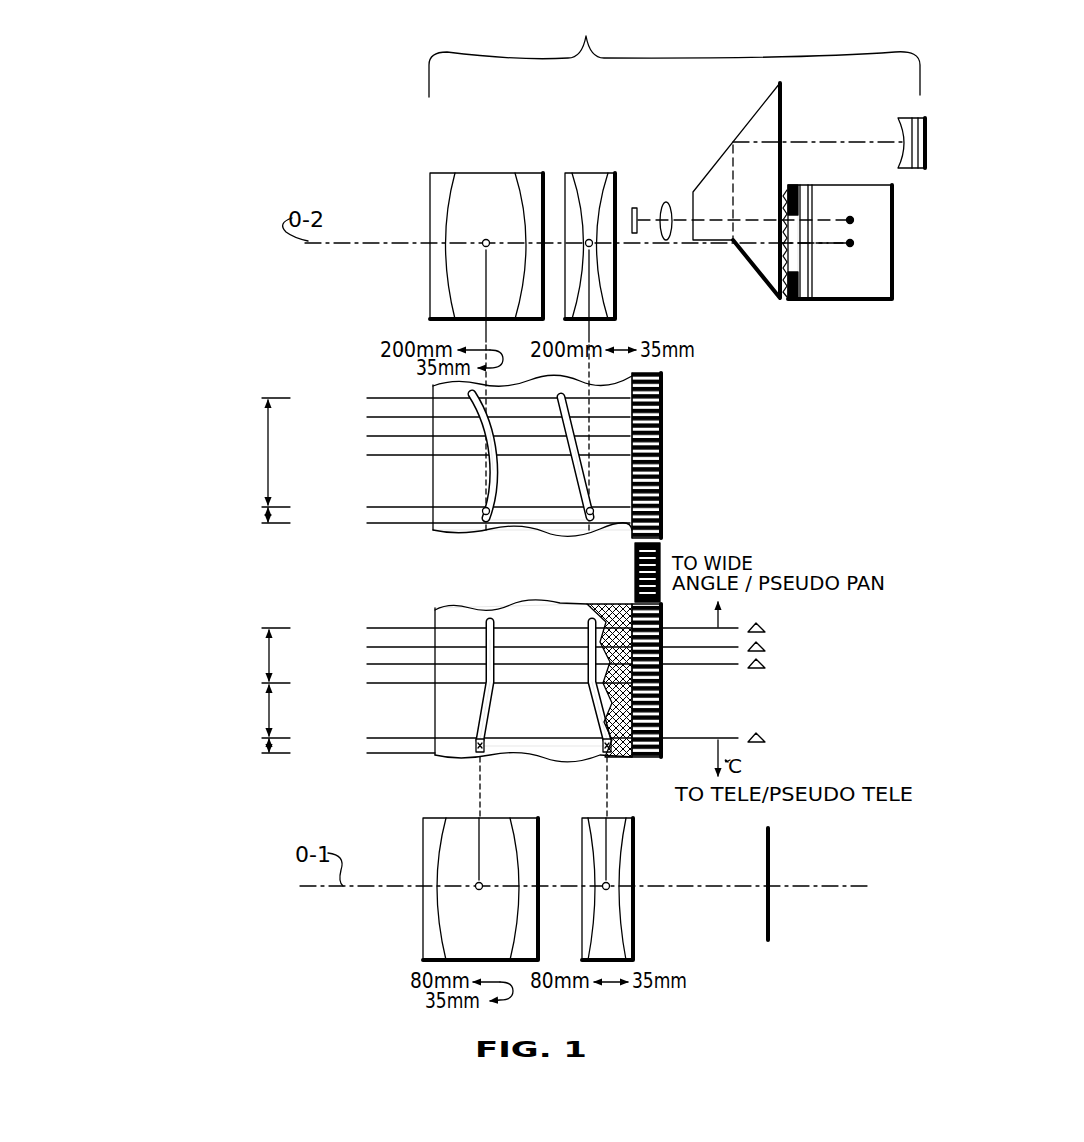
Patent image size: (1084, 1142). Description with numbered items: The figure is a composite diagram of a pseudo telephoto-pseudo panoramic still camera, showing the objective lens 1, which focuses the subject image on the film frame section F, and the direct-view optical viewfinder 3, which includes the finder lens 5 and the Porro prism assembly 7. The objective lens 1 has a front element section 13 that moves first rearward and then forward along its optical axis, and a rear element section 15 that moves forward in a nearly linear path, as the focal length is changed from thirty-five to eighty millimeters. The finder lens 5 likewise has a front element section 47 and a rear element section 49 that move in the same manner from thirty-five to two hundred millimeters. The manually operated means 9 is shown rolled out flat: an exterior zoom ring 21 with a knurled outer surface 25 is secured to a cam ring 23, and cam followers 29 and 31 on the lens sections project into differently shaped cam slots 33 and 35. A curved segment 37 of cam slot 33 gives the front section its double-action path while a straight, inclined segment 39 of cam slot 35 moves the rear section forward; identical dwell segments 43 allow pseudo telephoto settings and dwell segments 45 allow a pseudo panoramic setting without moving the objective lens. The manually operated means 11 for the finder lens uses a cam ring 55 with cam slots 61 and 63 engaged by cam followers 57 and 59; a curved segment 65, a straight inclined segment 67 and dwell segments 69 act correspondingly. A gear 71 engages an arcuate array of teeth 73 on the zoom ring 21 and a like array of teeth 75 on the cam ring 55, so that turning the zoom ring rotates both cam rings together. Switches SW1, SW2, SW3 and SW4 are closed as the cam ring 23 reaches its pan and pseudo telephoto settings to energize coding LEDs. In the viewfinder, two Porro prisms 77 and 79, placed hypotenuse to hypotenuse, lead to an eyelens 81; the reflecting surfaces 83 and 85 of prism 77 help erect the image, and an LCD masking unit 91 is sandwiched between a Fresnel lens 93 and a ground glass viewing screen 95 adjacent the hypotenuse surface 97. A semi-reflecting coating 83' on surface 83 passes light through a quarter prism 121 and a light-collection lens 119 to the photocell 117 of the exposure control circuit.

The objective lens 1 is at (420, 828).
The optical viewfinder 3 is at (674, 50).
The finder lens 5 is at (425, 184).
The Porro prism assembly 7 is at (860, 116).
The manually operated means 9 is at (430, 610).
The manually operated means 11 is at (428, 385).
The front element section 13 is at (424, 862).
The rear element section 15 is at (637, 856).
The zoom ring 21 is at (622, 759).
The cam ring 23 is at (490, 607).
The knurled outer surface 25 is at (612, 766).
The cam follower 29 is at (478, 738).
The cam follower 31 is at (603, 727).
The cam slot 33 is at (500, 690).
The cam slot 35 is at (597, 673).
The curved segment 37 is at (492, 712).
The straight, inclined segment 39 is at (601, 700).
The dwell segments 43 is at (588, 654).
The dwell segments 45 is at (601, 748).
The front element section 47 is at (428, 238).
The rear element section 49 is at (566, 200).
The cam ring 55 is at (524, 533).
The cam follower 57 is at (490, 510).
The cam follower 59 is at (588, 508).
The cam slot 61 is at (492, 458).
The cam slot 63 is at (577, 468).
The curved segment 65 is at (488, 483).
The straight, inclined segment 67 is at (565, 441).
The dwell segments 69 is at (588, 521).
The gear 71 is at (634, 576).
The arcuate array of teeth 73 is at (665, 695).
The array of teeth 75 is at (665, 462).
The Porro prism 77 is at (722, 170).
The Porro prism 79 is at (872, 282).
The eyelens 81 is at (908, 168).
The reflecting surface 83 is at (734, 261).
The semi-reflecting coating 83' is at (738, 296).
The reflecting surface 85 is at (774, 96).
The LCD masking unit 91 is at (797, 302).
The Fresnel lens 93 is at (788, 298).
The ground glass viewing screen 95 is at (808, 300).
The hypotenuse surface 97 is at (782, 178).
The photocell 117 is at (634, 206).
The light-collection lens 119 is at (666, 242).
The quarter prism 121 is at (692, 212).
The switch SW1 is at (768, 739).
The switch SW2 is at (768, 665).
The switch SW3 is at (768, 648).
The switch SW4 is at (768, 629).
The frame section F is at (768, 862).